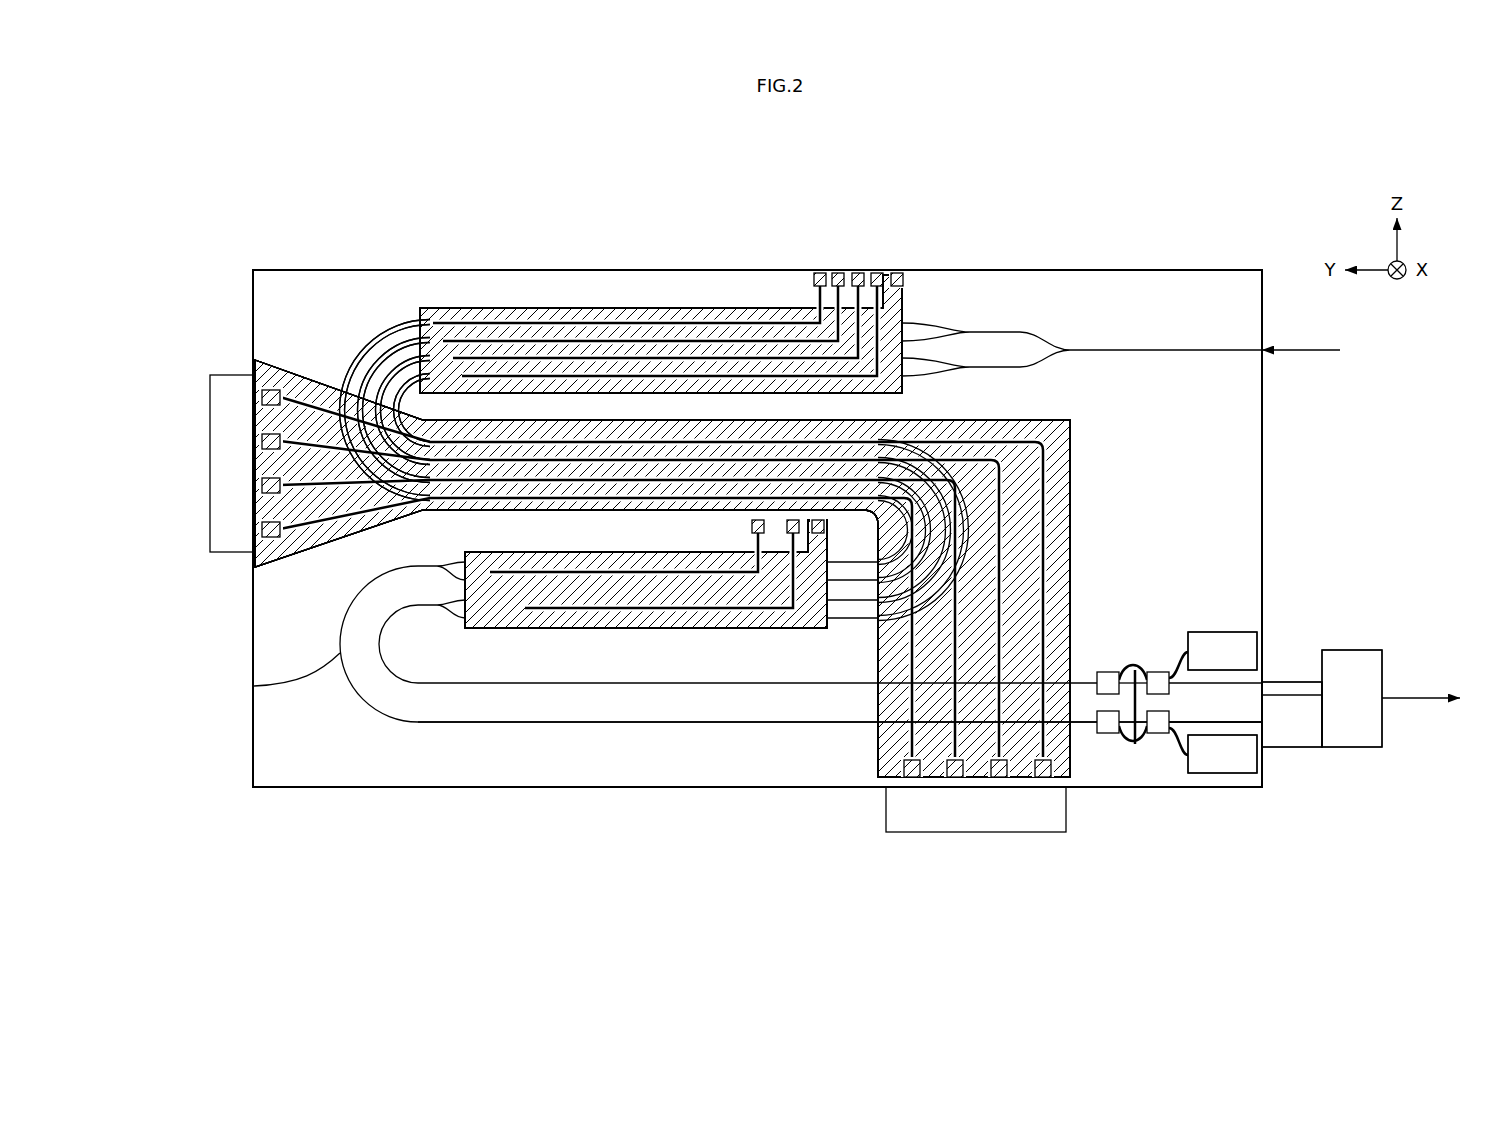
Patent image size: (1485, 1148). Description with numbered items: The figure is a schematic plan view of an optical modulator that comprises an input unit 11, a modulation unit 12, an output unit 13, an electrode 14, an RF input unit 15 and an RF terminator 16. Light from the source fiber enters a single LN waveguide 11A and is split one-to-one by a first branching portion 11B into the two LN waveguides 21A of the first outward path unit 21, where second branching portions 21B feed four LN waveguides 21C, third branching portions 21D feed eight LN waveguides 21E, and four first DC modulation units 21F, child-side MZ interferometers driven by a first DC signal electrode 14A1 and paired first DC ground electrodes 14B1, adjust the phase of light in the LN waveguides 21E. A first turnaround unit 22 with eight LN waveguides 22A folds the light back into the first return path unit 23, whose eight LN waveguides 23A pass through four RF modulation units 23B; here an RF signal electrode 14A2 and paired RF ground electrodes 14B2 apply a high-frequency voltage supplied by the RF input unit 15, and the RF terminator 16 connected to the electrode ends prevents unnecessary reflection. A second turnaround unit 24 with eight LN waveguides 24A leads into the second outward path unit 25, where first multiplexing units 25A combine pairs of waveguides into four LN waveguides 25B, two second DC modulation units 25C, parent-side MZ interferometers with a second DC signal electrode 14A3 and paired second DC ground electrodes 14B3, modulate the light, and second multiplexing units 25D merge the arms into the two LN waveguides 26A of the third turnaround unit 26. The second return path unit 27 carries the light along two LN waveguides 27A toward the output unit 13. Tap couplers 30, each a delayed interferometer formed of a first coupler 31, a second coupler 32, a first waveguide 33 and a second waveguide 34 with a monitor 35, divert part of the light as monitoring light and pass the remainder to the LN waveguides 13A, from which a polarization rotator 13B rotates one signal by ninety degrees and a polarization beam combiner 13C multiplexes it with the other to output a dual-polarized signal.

The input unit 11 is at (1158, 290).
The LN waveguide 11A is at (1212, 348).
The first branching portion 11B is at (1080, 313).
The modulation unit 12 is at (884, 167).
The output unit 13 is at (1272, 629).
The LN waveguides 13A is at (1198, 686).
The polarization rotator (PR) 13B is at (1305, 748).
The polarization beam combiner (PBC) 13C is at (1360, 650).
The electrode 14 is at (662, 526).
The first DC signal electrode 14A1 is at (748, 308).
The RF signal electrode 14A2 is at (266, 382).
The second DC signal electrode 14A3 is at (678, 612).
The first DC ground electrodes 14B1 is at (808, 305).
The RF ground electrodes 14B2 is at (280, 367).
The second DC ground electrodes 14B3 is at (1000, 470).
The RF input unit 15 is at (210, 538).
The RF terminator 16 is at (988, 834).
The first outward path unit 21 is at (716, 284).
The LN waveguides 21A is at (1023, 345).
The second branching portions 21B is at (992, 335).
The LN waveguides 21C is at (958, 343).
The third branching portions 21D is at (924, 328).
The LN waveguides 21E is at (677, 308).
The first DC modulation units 21F is at (633, 308).
The first turnaround unit 22 is at (340, 349).
The LN waveguides 22A is at (366, 372).
The first return path unit 23 is at (542, 514).
The LN waveguides 23A is at (590, 440).
The RF modulation units 23B is at (691, 432).
The second turnaround unit 24 is at (1018, 513).
The LN waveguides 24A is at (978, 528).
The second outward path unit 25 is at (572, 634).
The first multiplexing units 25A is at (863, 625).
The LN waveguides 25B is at (820, 540).
The second DC modulation units 25C is at (627, 628).
The second multiplexing units 25D is at (417, 612).
The third turnaround unit 26 is at (348, 703).
The LN waveguides 26A is at (254, 687).
The second return path unit 27 is at (582, 733).
The LN waveguides 27A is at (520, 724).
The tap couplers 30 is at (1142, 634).
The first coupler 31 is at (1106, 670).
The second coupler 32 is at (1157, 670).
The first waveguide 33 is at (1137, 690).
The second waveguide 34 is at (1135, 662).
The monitor 35 is at (1210, 632).